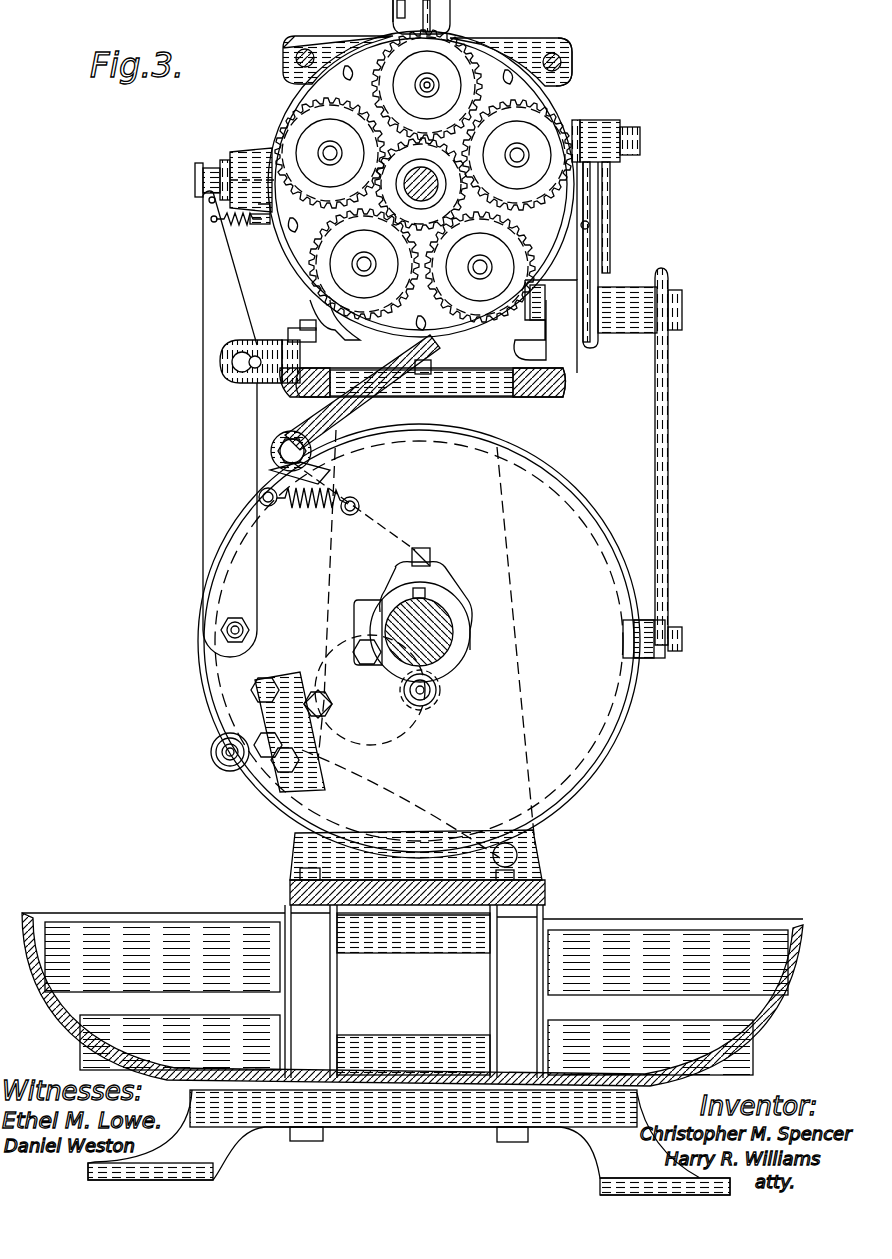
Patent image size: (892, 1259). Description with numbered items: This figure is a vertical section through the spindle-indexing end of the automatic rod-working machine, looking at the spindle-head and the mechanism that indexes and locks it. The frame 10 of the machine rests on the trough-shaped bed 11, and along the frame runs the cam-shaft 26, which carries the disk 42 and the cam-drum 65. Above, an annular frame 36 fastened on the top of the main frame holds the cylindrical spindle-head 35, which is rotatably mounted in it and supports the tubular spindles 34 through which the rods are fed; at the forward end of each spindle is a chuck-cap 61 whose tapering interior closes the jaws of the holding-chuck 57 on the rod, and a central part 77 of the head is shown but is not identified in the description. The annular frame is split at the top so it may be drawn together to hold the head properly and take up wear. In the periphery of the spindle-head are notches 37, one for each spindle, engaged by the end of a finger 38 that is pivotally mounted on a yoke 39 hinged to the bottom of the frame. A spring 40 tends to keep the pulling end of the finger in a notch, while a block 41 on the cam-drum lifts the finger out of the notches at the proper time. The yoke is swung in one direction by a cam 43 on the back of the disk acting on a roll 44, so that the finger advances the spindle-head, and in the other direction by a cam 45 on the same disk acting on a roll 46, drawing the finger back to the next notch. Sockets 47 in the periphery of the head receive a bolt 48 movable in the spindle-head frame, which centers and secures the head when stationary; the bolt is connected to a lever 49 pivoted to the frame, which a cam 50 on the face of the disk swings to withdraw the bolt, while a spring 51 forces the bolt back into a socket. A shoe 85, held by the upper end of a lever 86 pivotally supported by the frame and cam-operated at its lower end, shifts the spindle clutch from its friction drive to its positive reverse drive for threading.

The frame 10 is at (565, 392).
The trough-shaped bed 11 is at (412, 1012).
The cam-shaft 26 is at (470, 618).
The tubular spindles 34 is at (427, 70).
The spindle-head 35 is at (556, 84).
The annular frame 36 is at (540, 114).
The notches 37 is at (592, 217).
The finger 38 is at (425, 325).
The yoke 39 is at (398, 525).
The spring 40 is at (340, 495).
The block 41 is at (300, 455).
The disk 42 is at (647, 680).
The cam 43 is at (330, 735).
The roll 44 is at (230, 772).
The cam 45 is at (366, 600).
The roll 46 is at (425, 708).
The sockets 47 is at (545, 260).
The bolt 48 is at (236, 158).
The lever 49 is at (203, 312).
The cam 50 is at (250, 695).
The spring 51 is at (238, 226).
The holding-chuck 57 is at (433, 88).
The chuck-cap 61 is at (408, 62).
The cam-drum 65 is at (632, 722).
The central shaft 77 is at (440, 200).
The shoe 85 is at (586, 122).
The lever 86 is at (655, 450).